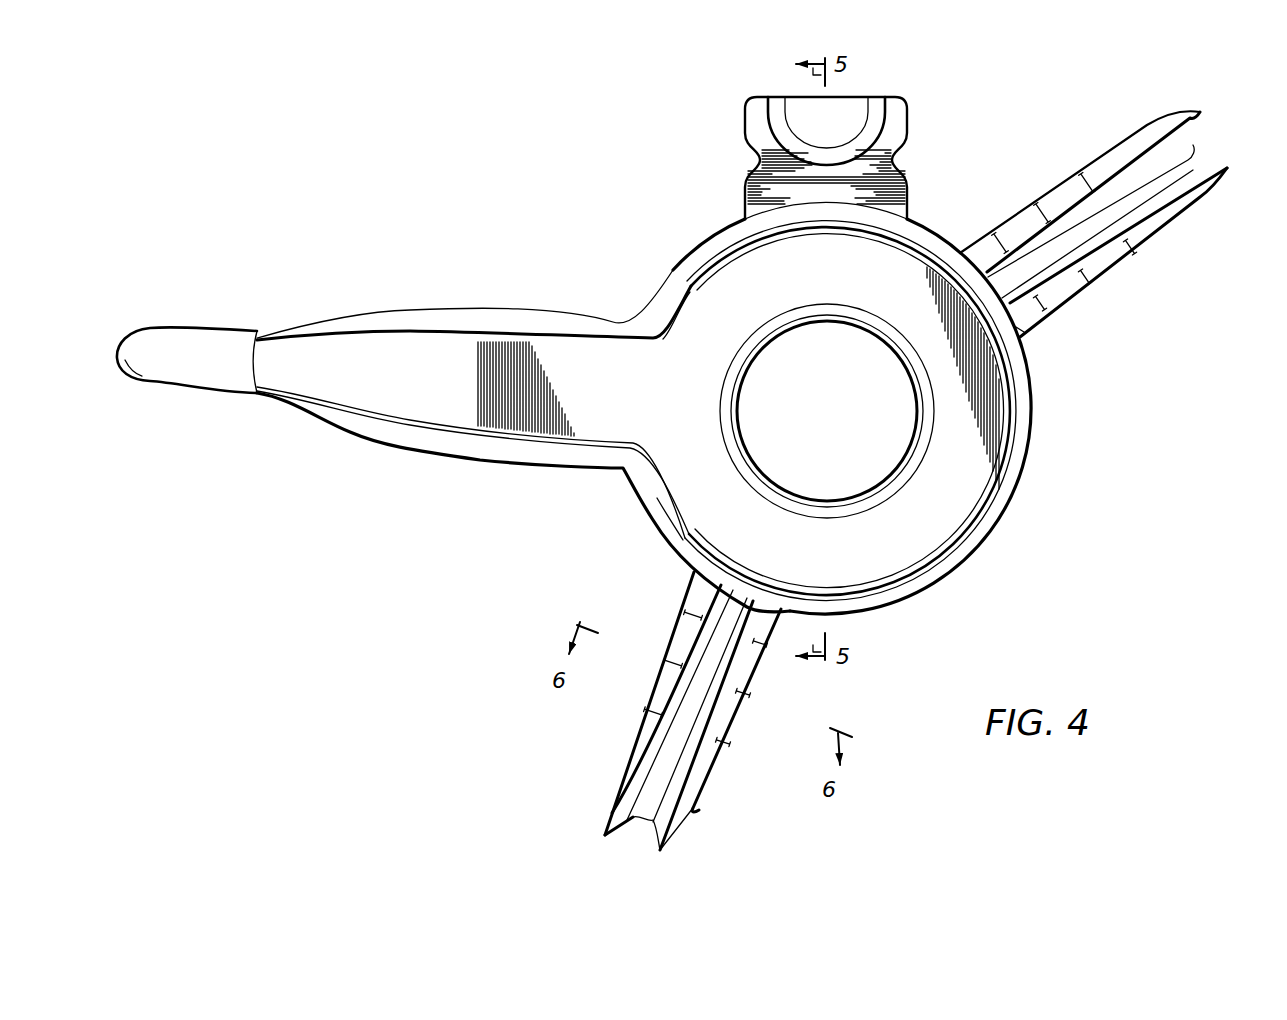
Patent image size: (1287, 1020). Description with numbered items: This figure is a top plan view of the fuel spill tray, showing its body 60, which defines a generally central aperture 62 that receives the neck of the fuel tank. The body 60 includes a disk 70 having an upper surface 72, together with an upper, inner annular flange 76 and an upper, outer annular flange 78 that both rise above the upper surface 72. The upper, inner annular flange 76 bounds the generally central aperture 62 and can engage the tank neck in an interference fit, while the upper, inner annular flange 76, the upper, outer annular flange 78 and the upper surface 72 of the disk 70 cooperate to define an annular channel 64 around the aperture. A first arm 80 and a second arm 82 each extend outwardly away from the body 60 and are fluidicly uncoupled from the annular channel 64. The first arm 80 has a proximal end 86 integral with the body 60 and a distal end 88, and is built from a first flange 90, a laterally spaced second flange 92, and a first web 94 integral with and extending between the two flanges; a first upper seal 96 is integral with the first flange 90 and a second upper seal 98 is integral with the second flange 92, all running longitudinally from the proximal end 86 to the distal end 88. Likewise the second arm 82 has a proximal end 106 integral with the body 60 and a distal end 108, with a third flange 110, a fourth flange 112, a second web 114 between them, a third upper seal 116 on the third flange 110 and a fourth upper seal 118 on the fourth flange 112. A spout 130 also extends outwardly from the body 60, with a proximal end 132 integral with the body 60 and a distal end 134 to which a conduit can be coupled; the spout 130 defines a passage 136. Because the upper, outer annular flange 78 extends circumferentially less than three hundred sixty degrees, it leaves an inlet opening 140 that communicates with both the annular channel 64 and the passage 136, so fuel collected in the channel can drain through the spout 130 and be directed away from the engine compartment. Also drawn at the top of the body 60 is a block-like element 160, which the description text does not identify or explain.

The body 60 is at (917, 604).
The generally central aperture 62 is at (815, 348).
The annular channel 64 is at (951, 491).
The disk 70 is at (948, 522).
The upper surface 72 is at (784, 559).
The upper, inner annular flange 76 is at (887, 480).
The upper, outer annular flange 78 is at (661, 492).
The first arm 80 is at (674, 718).
The second arm 82 is at (1104, 296).
The proximal end 86 is at (677, 590).
The distal end 88 is at (604, 765).
The first flange 90 is at (701, 809).
The second flange 92 is at (631, 723).
The first web 94 is at (638, 823).
The first upper seal 96 is at (665, 848).
The second upper seal 98 is at (604, 828).
The proximal end 106 is at (1041, 324).
The distal end 108 is at (1110, 220).
The third flange 110 is at (1108, 157).
The fourth flange 112 is at (1158, 247).
The second web 114 is at (1194, 158).
The third upper seal 116 is at (1195, 111).
The fourth upper seal 118 is at (1216, 172).
The spout 130 is at (407, 451).
The proximal end 132 is at (610, 470).
The distal end 134 is at (222, 326).
The passage 136 is at (564, 367).
The inlet opening 140 is at (681, 402).
The clamp block 160 is at (906, 116).